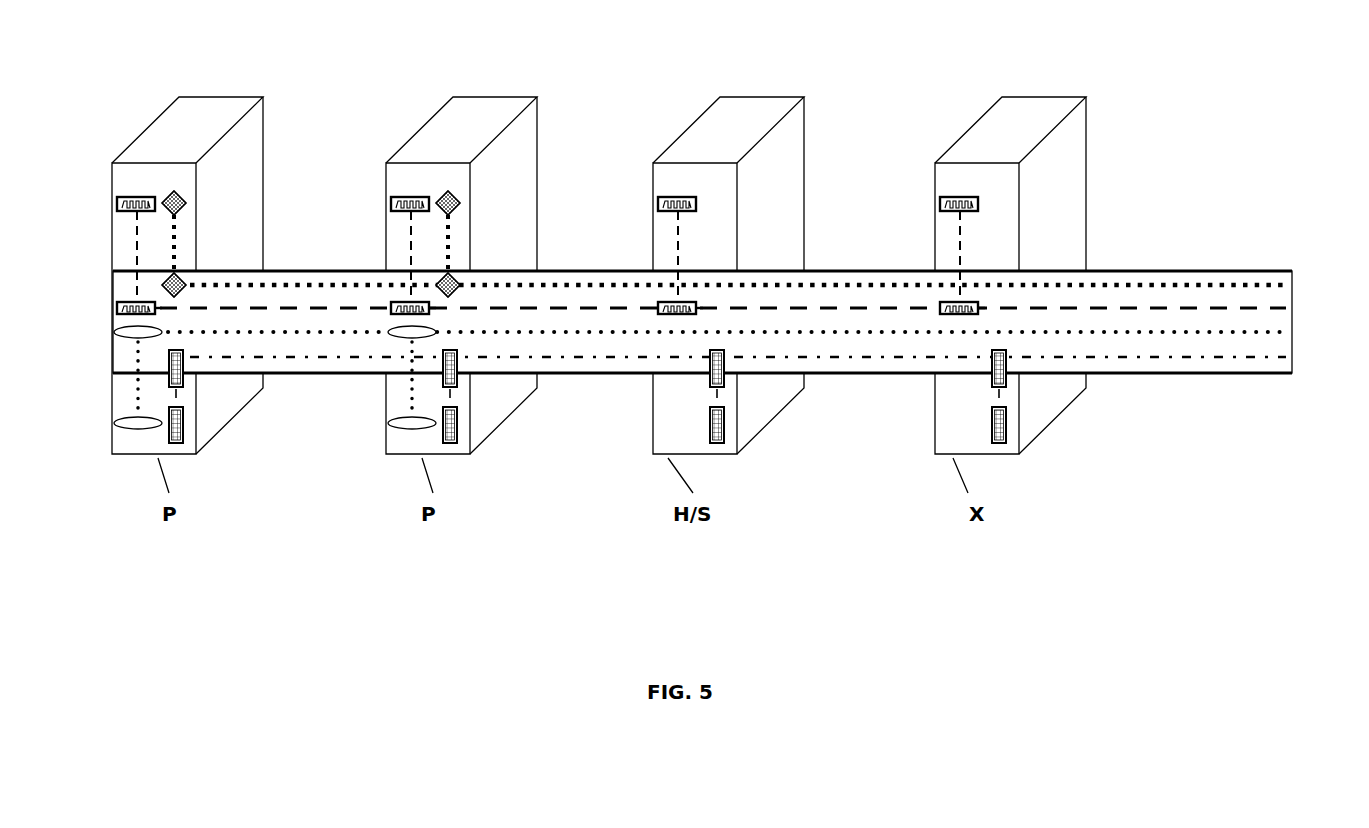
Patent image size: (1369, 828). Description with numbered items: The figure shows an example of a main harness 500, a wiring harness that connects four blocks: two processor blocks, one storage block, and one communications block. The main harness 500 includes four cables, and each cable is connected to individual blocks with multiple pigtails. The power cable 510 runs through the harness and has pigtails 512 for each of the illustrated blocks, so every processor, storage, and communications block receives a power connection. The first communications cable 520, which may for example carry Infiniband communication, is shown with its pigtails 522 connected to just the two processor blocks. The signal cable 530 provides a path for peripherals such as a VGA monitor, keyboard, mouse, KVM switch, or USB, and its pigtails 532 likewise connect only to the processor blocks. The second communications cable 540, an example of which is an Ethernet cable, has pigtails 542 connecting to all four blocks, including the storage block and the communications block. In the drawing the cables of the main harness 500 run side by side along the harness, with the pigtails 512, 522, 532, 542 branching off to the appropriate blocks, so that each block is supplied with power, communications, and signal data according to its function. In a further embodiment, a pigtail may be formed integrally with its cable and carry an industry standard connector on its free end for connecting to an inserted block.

The main harness 500 is at (1183, 269).
The power cable 510 is at (1293, 308).
The pigtails 512 is at (135, 239).
The first communications cable 520 is at (1293, 283).
The pigtails 522 is at (172, 253).
The signal cable 530 is at (1293, 332).
The pigtails 532 is at (133, 388).
The second communications cable 540 is at (1293, 357).
The pigtails 542 is at (177, 392).